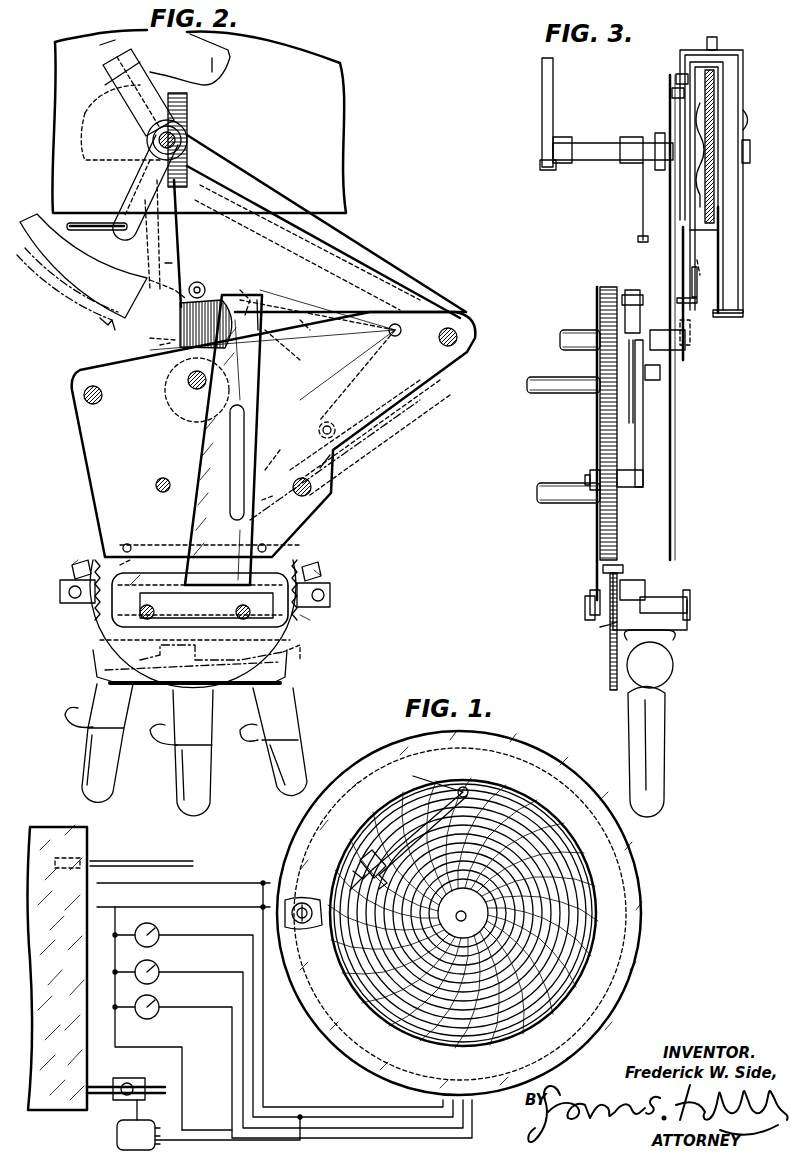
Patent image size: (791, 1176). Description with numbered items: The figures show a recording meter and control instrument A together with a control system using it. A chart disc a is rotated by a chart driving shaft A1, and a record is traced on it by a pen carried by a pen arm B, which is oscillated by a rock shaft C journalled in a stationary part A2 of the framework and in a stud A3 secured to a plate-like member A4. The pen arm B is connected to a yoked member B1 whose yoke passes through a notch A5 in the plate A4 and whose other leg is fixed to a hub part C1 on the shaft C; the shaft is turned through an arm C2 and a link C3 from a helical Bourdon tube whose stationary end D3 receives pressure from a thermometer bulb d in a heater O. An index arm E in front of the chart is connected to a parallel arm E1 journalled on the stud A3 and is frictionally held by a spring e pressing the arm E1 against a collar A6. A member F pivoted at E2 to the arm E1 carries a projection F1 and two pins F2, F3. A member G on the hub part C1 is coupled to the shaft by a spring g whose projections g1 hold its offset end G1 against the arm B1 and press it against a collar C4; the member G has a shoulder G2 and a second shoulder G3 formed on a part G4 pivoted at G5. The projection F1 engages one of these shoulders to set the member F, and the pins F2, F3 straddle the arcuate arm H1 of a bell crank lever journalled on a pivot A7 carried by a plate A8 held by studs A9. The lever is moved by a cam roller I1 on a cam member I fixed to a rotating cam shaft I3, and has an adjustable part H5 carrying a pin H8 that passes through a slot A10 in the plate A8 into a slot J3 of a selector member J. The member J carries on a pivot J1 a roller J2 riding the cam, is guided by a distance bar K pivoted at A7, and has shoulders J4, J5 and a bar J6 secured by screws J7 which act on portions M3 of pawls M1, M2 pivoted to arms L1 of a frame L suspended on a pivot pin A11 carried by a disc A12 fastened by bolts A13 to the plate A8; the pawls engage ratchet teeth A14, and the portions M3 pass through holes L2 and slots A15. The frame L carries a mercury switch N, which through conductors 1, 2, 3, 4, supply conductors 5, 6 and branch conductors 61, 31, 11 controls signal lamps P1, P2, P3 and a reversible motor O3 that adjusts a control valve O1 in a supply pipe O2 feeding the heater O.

In FIG. 1, the recording meter and control instrument A is at (643, 907).
In FIG. 1, the chart disc a is at (580, 875).
In FIG. 1, the chart driving shaft A1 is at (452, 921).
In FIG. 3, the pen arm B is at (743, 255).
In FIG. 1, the pen arm B is at (450, 790).
In FIG. 2, the index arm E is at (365, 250).
In FIG. 3, the index arm E is at (720, 253).
In FIG. 1, the index arm E is at (352, 860).
In FIG. 1, the fluid expansion thermometer bulb d is at (85, 833).
In FIG. 1, the stationary end of Bourdon tube D3 is at (130, 863).
In FIG. 1, the supply conductor 5 is at (200, 883).
In FIG. 1, the energizing current supply conductor 6 is at (222, 907).
In FIG. 1, the branch conductor 61 is at (113, 970).
In FIG. 1, the signal lamp P1 is at (160, 1005).
In FIG. 1, the signal lamp P2 is at (160, 970).
In FIG. 1, the signal lamp P3 is at (160, 932).
In FIG. 1, the heater O is at (58, 967).
In FIG. 1, the control valve O1 is at (133, 1085).
In FIG. 1, the supply pipe O2 is at (95, 1087).
In FIG. 1, the reversible motor O3 is at (125, 1135).
In FIG. 1, the branch conductor 11 is at (210, 1120).
In FIG. 1, the conductor 1 is at (385, 1138).
In FIG. 1, the conductor 2 is at (362, 1128).
In FIG. 1, the conductor 3 is at (345, 1117).
In FIG. 1, the conductor 4 is at (325, 1105).
In FIG. 1, the branch conductor 31 is at (300, 1140).
In FIG. 3, the stationary part A2 is at (553, 95).
In FIG. 3, the stud A3 is at (703, 138).
In FIG. 2, the plate-like member A4 is at (199, 121).
In FIG. 3, the plate-like member A4 is at (714, 100).
In FIG. 2, the notch A5 is at (218, 68).
In FIG. 3, the notch A5 is at (723, 65).
In FIG. 3, the collar portion A6 is at (723, 175).
In FIG. 2, the pivot A7 is at (396, 325).
In FIG. 2, the plate A8 is at (320, 468).
In FIG. 3, the plate A8 is at (617, 505).
In FIG. 2, the supporting studs A9 is at (350, 492).
In FIG. 3, the supporting studs A9 is at (570, 400).
In FIG. 2, the slot A10 is at (270, 490).
In FIG. 3, the pivot pin A11 is at (690, 605).
In FIG. 2, the plate or disc A12 is at (300, 565).
In FIG. 3, the plate or disc A12 is at (610, 660).
In FIG. 2, the screws or bolts A13 is at (125, 545).
In FIG. 2, the ratchet teeth A14 is at (72, 565).
In FIG. 3, the ratchet teeth A14 is at (592, 605).
In FIG. 2, the slot A15 is at (93, 625).
In FIG. 2, the U shaped member B1 is at (215, 75).
In FIG. 3, the U shaped member B1 is at (680, 60).
In FIG. 2, the rock shaft C is at (185, 135).
In FIG. 3, the rock shaft C is at (590, 162).
In FIG. 3, the hub like part C1 is at (643, 185).
In FIG. 2, the arm C2 is at (135, 185).
In FIG. 3, the arm C2 is at (640, 230).
In FIG. 2, the link C3 is at (95, 230).
In FIG. 3, the link C3 is at (640, 240).
In FIG. 3, the collar C4 is at (630, 165).
In FIG. 2, the spring e is at (190, 105).
In FIG. 3, the spring e is at (714, 210).
In FIG. 2, the parallel arm E1 is at (300, 215).
In FIG. 3, the parallel arm E1 is at (700, 228).
In FIG. 2, the pivot E2 is at (196, 284).
In FIG. 3, the pivot E2 is at (700, 277).
In FIG. 2, the member F is at (250, 295).
In FIG. 3, the member F is at (687, 300).
In FIG. 3, the transverse projection F1 is at (660, 372).
In FIG. 2, the lateral projection F2 is at (150, 280).
In FIG. 3, the lateral projection F2 is at (697, 285).
In FIG. 2, the lateral projection F3 is at (150, 338).
In FIG. 3, the lateral projection F3 is at (687, 345).
In FIG. 2, the member G is at (85, 113).
In FIG. 3, the member G is at (668, 268).
In FIG. 2, the offset upper end portion G1 is at (100, 45).
In FIG. 3, the offset upper end portion G1 is at (668, 70).
In FIG. 2, the transverse projections g1 is at (105, 85).
In FIG. 3, the transverse projections g1 is at (672, 80).
In FIG. 3, the spring g is at (668, 97).
In FIG. 2, the shoulder G2 is at (287, 345).
In FIG. 2, the second shoulder G3 is at (112, 322).
In FIG. 2, the part G4 is at (170, 263).
In FIG. 2, the pivot G5 is at (180, 205).
In FIG. 3, the arm H1 is at (668, 250).
In FIG. 3, the part H5 is at (643, 465).
In FIG. 2, the pin H8 is at (262, 480).
In FIG. 3, the pin H8 is at (590, 478).
In FIG. 2, the cam member I is at (257, 300).
In FIG. 3, the cam member I is at (633, 423).
In FIG. 2, the cam roller I1 is at (300, 320).
In FIG. 3, the cam roller I1 is at (665, 385).
In FIG. 2, the cam shaft I3 is at (185, 380).
In FIG. 2, the selector element J is at (193, 624).
In FIG. 3, the selector element J is at (600, 538).
In FIG. 2, the transverse pivot J1 is at (205, 290).
In FIG. 3, the transverse pivot J1 is at (600, 293).
In FIG. 2, the roller J2 is at (240, 290).
In FIG. 3, the roller J2 is at (632, 295).
In FIG. 2, the slot J3 is at (265, 470).
In FIG. 2, the shoulder J4 is at (320, 620).
In FIG. 2, the shoulder J5 is at (145, 597).
In FIG. 2, the bar J6 is at (170, 650).
In FIG. 2, the screws J7 is at (295, 650).
In FIG. 2, the radius or distance bar K is at (160, 345).
In FIG. 3, the supporting frame L is at (610, 627).
In FIG. 2, the arms L1 is at (60, 590).
In FIG. 2, the hole L2 is at (105, 560).
In FIG. 2, the pawl member M1 is at (328, 585).
In FIG. 3, the pawl member M1 is at (635, 582).
In FIG. 2, the pawl member M2 is at (70, 570).
In FIG. 2, the transversely extending portion M3 is at (145, 585).
In FIG. 3, the transversely extending portion M3 is at (603, 570).
In FIG. 3, the mercury switch N is at (665, 668).